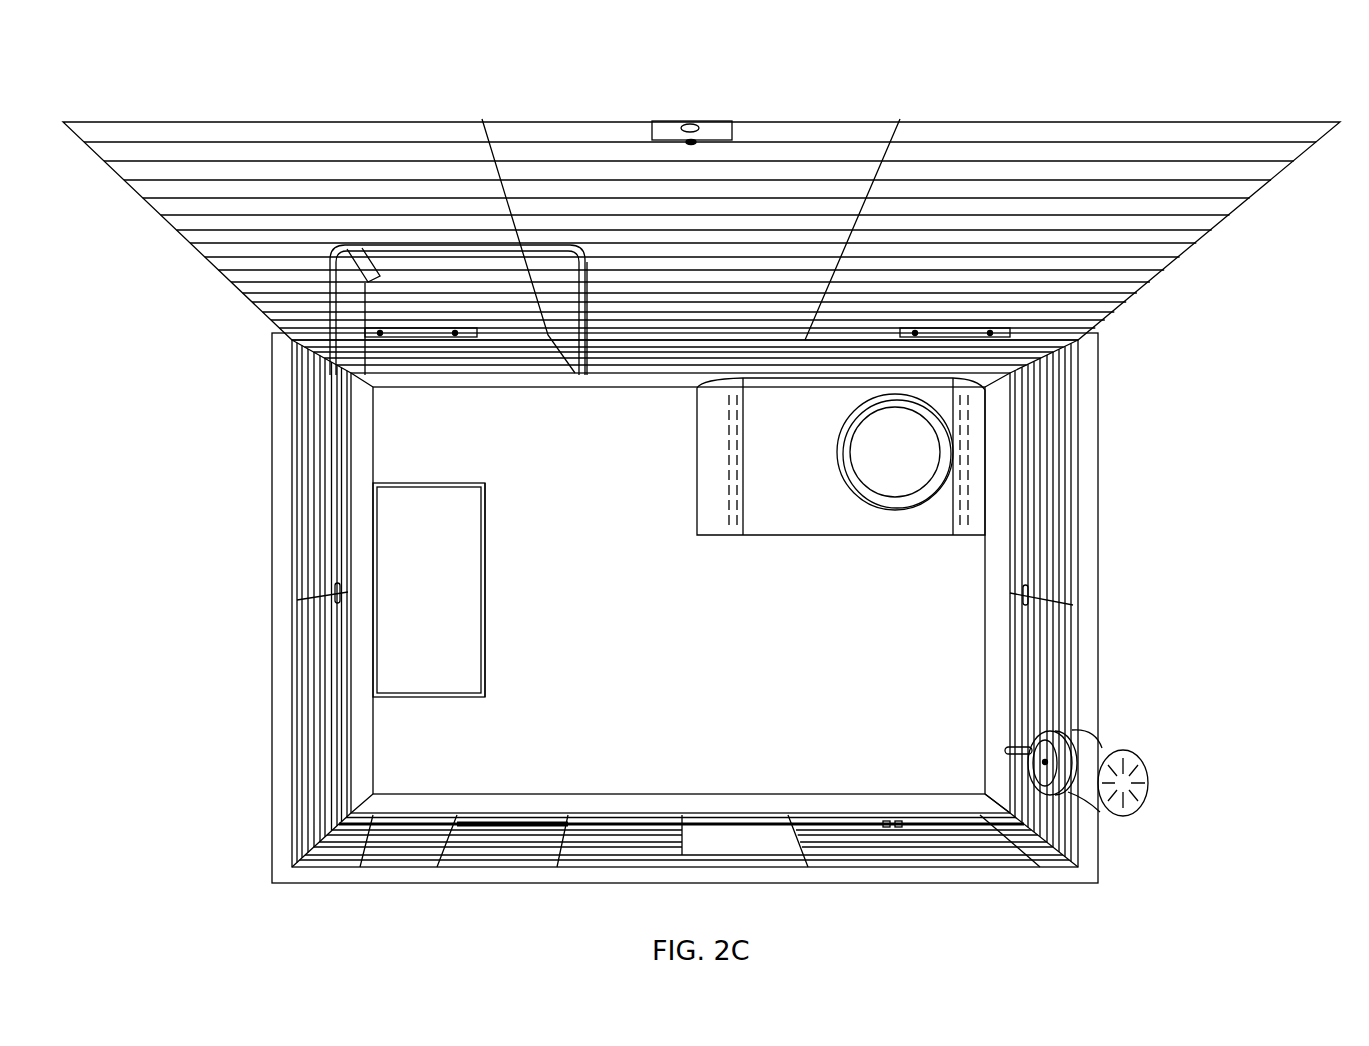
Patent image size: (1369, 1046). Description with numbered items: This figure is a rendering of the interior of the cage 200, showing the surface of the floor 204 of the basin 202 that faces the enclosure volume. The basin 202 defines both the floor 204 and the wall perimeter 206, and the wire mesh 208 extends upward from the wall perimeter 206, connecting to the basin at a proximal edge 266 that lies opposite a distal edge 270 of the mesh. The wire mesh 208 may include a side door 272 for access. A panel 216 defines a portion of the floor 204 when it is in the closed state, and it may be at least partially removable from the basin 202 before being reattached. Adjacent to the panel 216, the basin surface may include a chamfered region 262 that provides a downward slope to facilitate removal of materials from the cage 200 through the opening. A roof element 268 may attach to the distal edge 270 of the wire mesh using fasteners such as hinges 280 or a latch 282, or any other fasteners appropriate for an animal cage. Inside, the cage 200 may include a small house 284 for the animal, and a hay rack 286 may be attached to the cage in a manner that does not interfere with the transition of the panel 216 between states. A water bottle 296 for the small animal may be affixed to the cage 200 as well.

The cage 200 is at (960, 98).
The basin 202 is at (997, 813).
The floor 204 is at (683, 762).
The wall perimeter 206 is at (1000, 683).
The wire mesh 208 is at (310, 490).
The panel 216 is at (455, 618).
The chamfered region 262 is at (485, 663).
The proximal edge 266 is at (345, 662).
The roof element 268 is at (203, 256).
The distal edge 270 is at (290, 383).
The side door 272 is at (683, 843).
The hinges 280 is at (453, 338).
The latch 282 is at (682, 126).
The small house 284 is at (818, 530).
The hay rack 286 is at (411, 262).
The water bottle 296 is at (1140, 785).